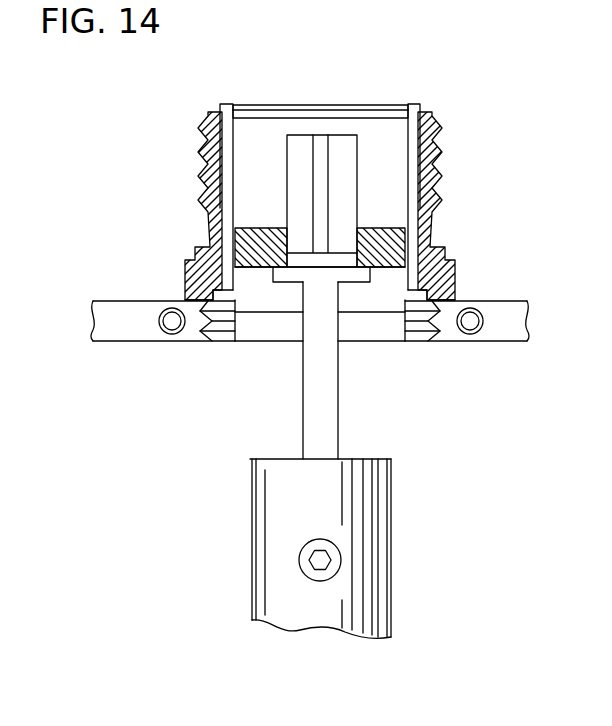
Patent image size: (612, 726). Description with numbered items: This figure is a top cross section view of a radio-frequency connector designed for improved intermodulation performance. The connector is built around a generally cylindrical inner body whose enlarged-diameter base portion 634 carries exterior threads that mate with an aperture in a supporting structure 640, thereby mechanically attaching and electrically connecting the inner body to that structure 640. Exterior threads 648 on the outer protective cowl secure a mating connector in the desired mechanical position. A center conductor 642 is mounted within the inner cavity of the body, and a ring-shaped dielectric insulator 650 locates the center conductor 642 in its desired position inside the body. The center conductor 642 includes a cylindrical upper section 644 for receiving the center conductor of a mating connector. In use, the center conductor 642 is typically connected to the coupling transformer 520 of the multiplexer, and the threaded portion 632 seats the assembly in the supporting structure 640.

The coupling transformer 520 is at (390, 535).
The right threaded insert 632 is at (393, 112).
The base portion 634 is at (222, 342).
The supporting structure 640 is at (118, 342).
The center conductor 642 is at (338, 388).
The cylindrical upper section 644 is at (298, 133).
The exterior threads 648 is at (200, 117).
The dielectric insulator 650 is at (262, 227).